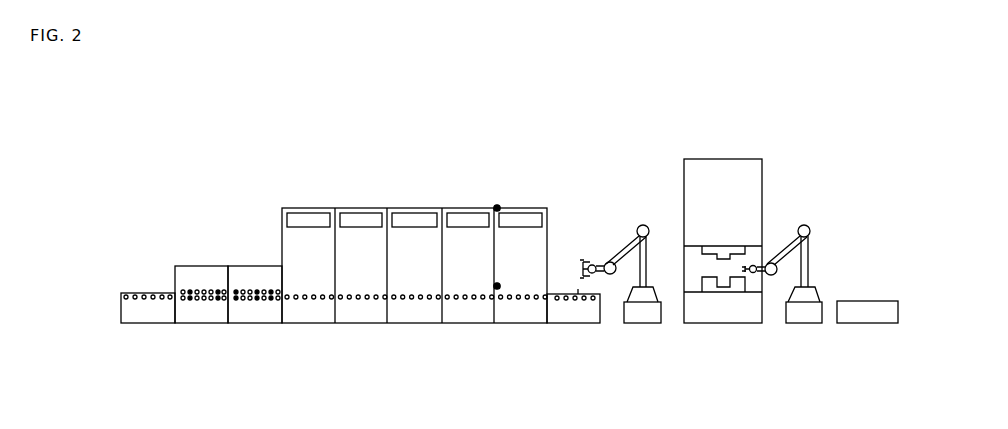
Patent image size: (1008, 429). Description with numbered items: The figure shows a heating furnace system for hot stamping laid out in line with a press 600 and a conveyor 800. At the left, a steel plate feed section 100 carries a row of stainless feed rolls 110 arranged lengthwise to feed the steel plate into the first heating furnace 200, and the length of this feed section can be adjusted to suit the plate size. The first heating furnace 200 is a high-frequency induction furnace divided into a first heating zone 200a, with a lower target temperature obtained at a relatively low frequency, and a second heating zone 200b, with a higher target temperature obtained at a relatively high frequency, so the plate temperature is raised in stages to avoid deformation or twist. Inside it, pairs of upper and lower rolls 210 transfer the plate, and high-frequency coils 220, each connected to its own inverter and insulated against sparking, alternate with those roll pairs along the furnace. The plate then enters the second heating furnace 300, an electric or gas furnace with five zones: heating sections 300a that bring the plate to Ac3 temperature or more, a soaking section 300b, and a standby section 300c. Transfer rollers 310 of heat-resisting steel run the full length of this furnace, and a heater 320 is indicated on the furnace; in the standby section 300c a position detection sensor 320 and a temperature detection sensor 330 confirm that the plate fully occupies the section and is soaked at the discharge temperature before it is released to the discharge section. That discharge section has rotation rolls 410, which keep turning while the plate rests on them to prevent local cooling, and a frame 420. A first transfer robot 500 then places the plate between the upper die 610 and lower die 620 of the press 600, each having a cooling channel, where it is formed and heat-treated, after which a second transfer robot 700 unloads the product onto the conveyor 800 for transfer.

The steel plate feed section 100 is at (146, 293).
The feed rolls 110 is at (148, 302).
The first heating furnace 200 is at (213, 282).
The first heating zone 200a is at (186, 299).
The second heating zone 200b is at (252, 299).
The pairs of upper and lower rolls 210 is at (238, 300).
The high-frequency coils 220 is at (190, 300).
The second heating furnace 300 is at (391, 249).
The heating sections 300a is at (415, 208).
The soaking section 300b is at (465, 225).
The standby section 300c is at (528, 208).
The transfer rollers 310 is at (305, 300).
The heater 320 is at (468, 210).
The temperature detection sensor 330 is at (497, 289).
The rotation rolls 410 is at (565, 300).
The frame 420 is at (568, 292).
The first transfer robot 500 is at (631, 218).
The press 600 is at (728, 225).
The upper die 610 is at (710, 287).
The lower die 620 is at (722, 250).
The second transfer robot 700 is at (797, 330).
The conveyor 800 is at (873, 330).